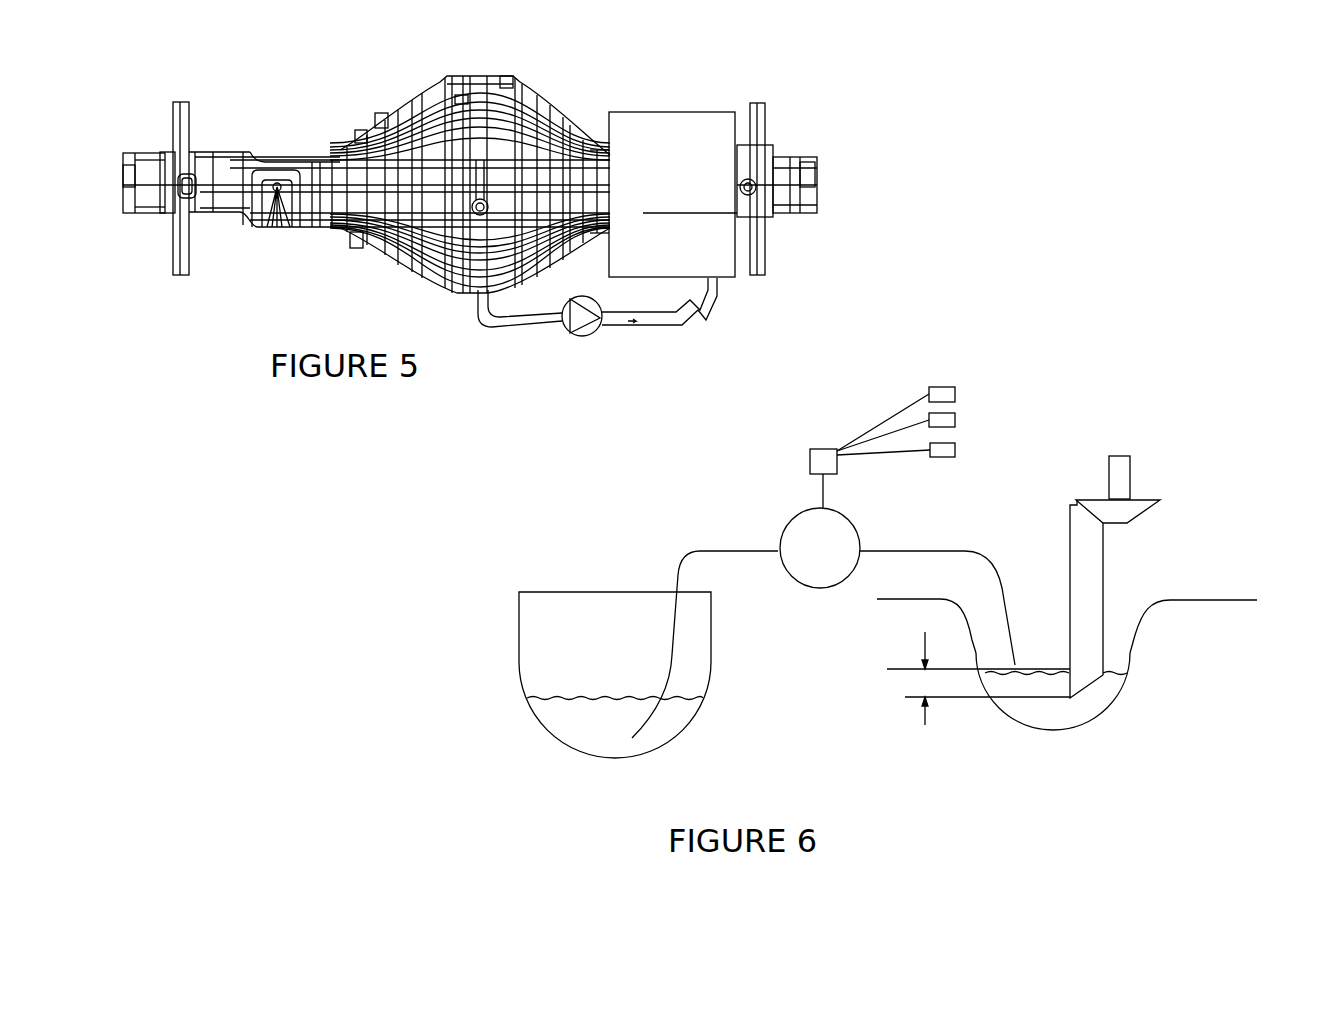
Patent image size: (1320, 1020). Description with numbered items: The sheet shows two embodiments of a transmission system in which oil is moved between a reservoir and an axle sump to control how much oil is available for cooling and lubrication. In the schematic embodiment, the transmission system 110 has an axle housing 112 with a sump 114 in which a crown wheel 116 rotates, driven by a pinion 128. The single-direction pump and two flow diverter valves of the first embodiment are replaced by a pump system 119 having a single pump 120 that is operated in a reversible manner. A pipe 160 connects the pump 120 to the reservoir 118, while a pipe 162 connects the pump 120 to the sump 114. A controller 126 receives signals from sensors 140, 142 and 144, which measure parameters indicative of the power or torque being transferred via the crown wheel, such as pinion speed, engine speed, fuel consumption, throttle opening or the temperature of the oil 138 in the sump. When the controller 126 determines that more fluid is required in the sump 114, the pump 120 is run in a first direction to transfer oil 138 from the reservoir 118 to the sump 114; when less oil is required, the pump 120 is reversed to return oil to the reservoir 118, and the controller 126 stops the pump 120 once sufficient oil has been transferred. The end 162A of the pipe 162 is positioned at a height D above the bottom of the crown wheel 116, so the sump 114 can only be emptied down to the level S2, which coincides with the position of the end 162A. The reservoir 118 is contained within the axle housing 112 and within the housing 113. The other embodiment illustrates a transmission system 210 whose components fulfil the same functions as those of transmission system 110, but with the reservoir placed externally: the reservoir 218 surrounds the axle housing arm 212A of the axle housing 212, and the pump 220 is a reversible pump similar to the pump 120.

In FIG. 5, the transmission system 210 is at (470, 199).
In FIG. 5, the axle housing 212 is at (547, 117).
In FIG. 5, the axle housing arm 212A is at (590, 148).
In FIG. 5, the reservoir 218 is at (686, 167).
In FIG. 5, the pump 220 is at (597, 332).
In FIG. 6, the transmission system 110 is at (887, 581).
In FIG. 6, the axle housing 112 is at (1158, 607).
In FIG. 6, the housing 113 is at (1135, 662).
In FIG. 6, the sump 114 is at (1070, 733).
In FIG. 6, the crown wheel 116 is at (1095, 553).
In FIG. 6, the reservoir 118 is at (614, 697).
In FIG. 6, the pump system 119 is at (794, 606).
In FIG. 6, the pump 120 is at (850, 509).
In FIG. 6, the controller 126 is at (810, 463).
In FIG. 6, the pinion 128 is at (1120, 477).
In FIG. 6, the oil 138 is at (599, 747).
In FIG. 6, the sensor 140 is at (957, 395).
In FIG. 6, the sensor 142 is at (957, 420).
In FIG. 6, the sensor 144 is at (955, 450).
In FIG. 6, the pipe 160 is at (701, 551).
In FIG. 6, the pipe 162 is at (907, 550).
In FIG. 6, the end 162A is at (1017, 665).
In FIG. 6, the level S2 is at (893, 668).
In FIG. 6, the height D is at (987, 678).